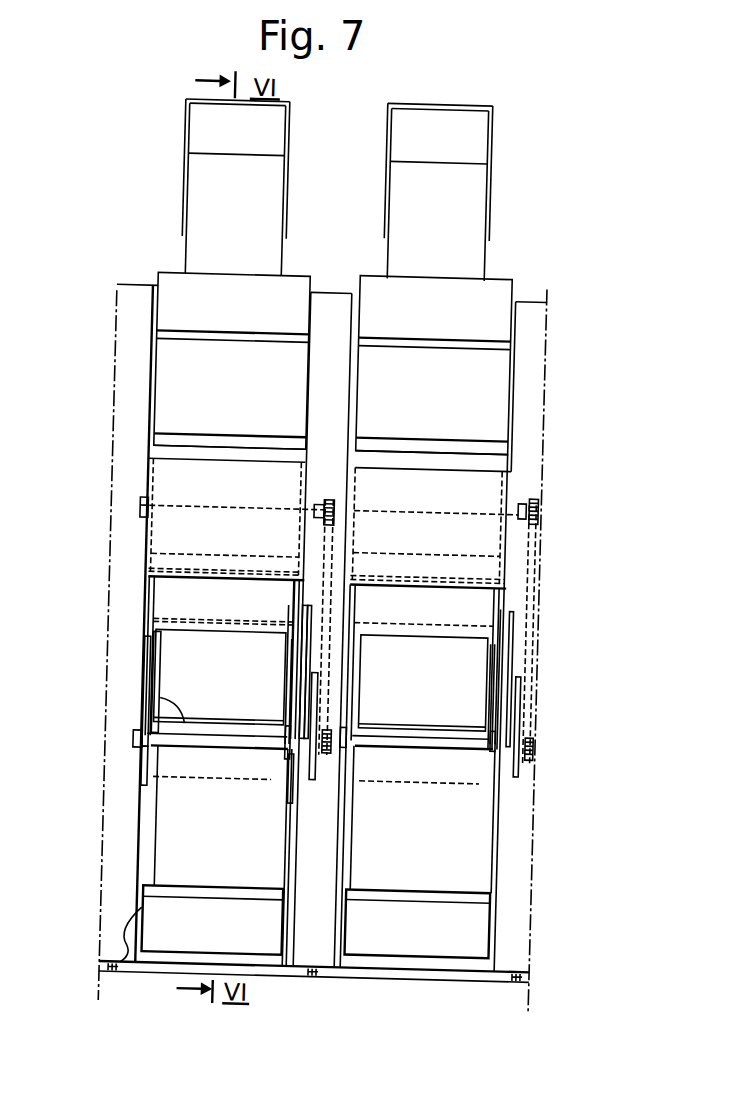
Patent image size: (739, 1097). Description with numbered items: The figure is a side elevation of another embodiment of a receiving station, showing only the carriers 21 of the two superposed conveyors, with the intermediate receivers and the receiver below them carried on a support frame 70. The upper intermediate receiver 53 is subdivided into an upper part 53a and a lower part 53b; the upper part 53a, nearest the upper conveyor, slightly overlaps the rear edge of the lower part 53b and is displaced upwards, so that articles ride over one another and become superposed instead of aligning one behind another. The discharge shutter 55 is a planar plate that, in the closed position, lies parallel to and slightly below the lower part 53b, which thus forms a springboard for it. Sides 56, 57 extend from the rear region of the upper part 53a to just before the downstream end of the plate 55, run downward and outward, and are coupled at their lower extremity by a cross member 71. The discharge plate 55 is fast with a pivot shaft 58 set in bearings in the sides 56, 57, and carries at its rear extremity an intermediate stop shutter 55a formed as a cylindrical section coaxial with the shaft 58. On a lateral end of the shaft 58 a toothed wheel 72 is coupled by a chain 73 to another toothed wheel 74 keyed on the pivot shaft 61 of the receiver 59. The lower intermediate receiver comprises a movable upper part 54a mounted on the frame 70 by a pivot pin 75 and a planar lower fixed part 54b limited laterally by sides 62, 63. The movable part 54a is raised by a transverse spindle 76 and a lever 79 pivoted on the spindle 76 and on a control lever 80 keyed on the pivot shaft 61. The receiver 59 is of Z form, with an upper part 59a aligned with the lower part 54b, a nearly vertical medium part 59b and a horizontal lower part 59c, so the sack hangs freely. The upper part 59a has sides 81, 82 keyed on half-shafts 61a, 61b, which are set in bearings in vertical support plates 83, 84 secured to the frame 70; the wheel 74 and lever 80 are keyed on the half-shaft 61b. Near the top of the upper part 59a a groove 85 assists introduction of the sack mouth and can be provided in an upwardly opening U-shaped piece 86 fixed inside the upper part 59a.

The carrier 21 is at (388, 235).
The upper intermediate receiver 53 is at (232, 360).
The upper part of upper intermediate receiver 53a is at (489, 288).
The lower part of upper intermediate receiver 53b is at (492, 381).
The movable upper part of lower intermediate receiver 54a is at (166, 605).
The lower fixed part of lower intermediate receiver 54b is at (319, 685).
The discharge shutter 55 is at (256, 462).
The intermediate stop shutter 55a is at (188, 444).
The side 56 is at (143, 380).
The side 57 is at (507, 313).
The pivot shaft 58 is at (235, 514).
The receiver 59 is at (160, 844).
The upper part of receiver 59a is at (321, 763).
The medium part of receiver 59b is at (324, 818).
The lower part of receiver 59c is at (316, 922).
The pivot shaft 61 is at (291, 756).
The half-shaft 61a is at (355, 729).
The half-shaft 61b is at (496, 744).
The side 62 is at (149, 587).
The side 63 is at (301, 591).
The support frame 70 is at (149, 912).
The cross member 71 is at (329, 495).
The toothed wheel 72 is at (325, 500).
The chain 73 is at (532, 580).
The toothed wheel 74 is at (330, 753).
The pivot pin 75 is at (240, 570).
The transverse spindle 76 is at (205, 625).
The lever 79 is at (297, 654).
The control lever 80 is at (308, 624).
The side 81 is at (147, 782).
The side 82 is at (291, 774).
The vertical support plate 83 is at (138, 760).
The vertical support plate 84 is at (316, 771).
The groove 85 is at (290, 634).
The U-shaped piece 86 is at (144, 672).